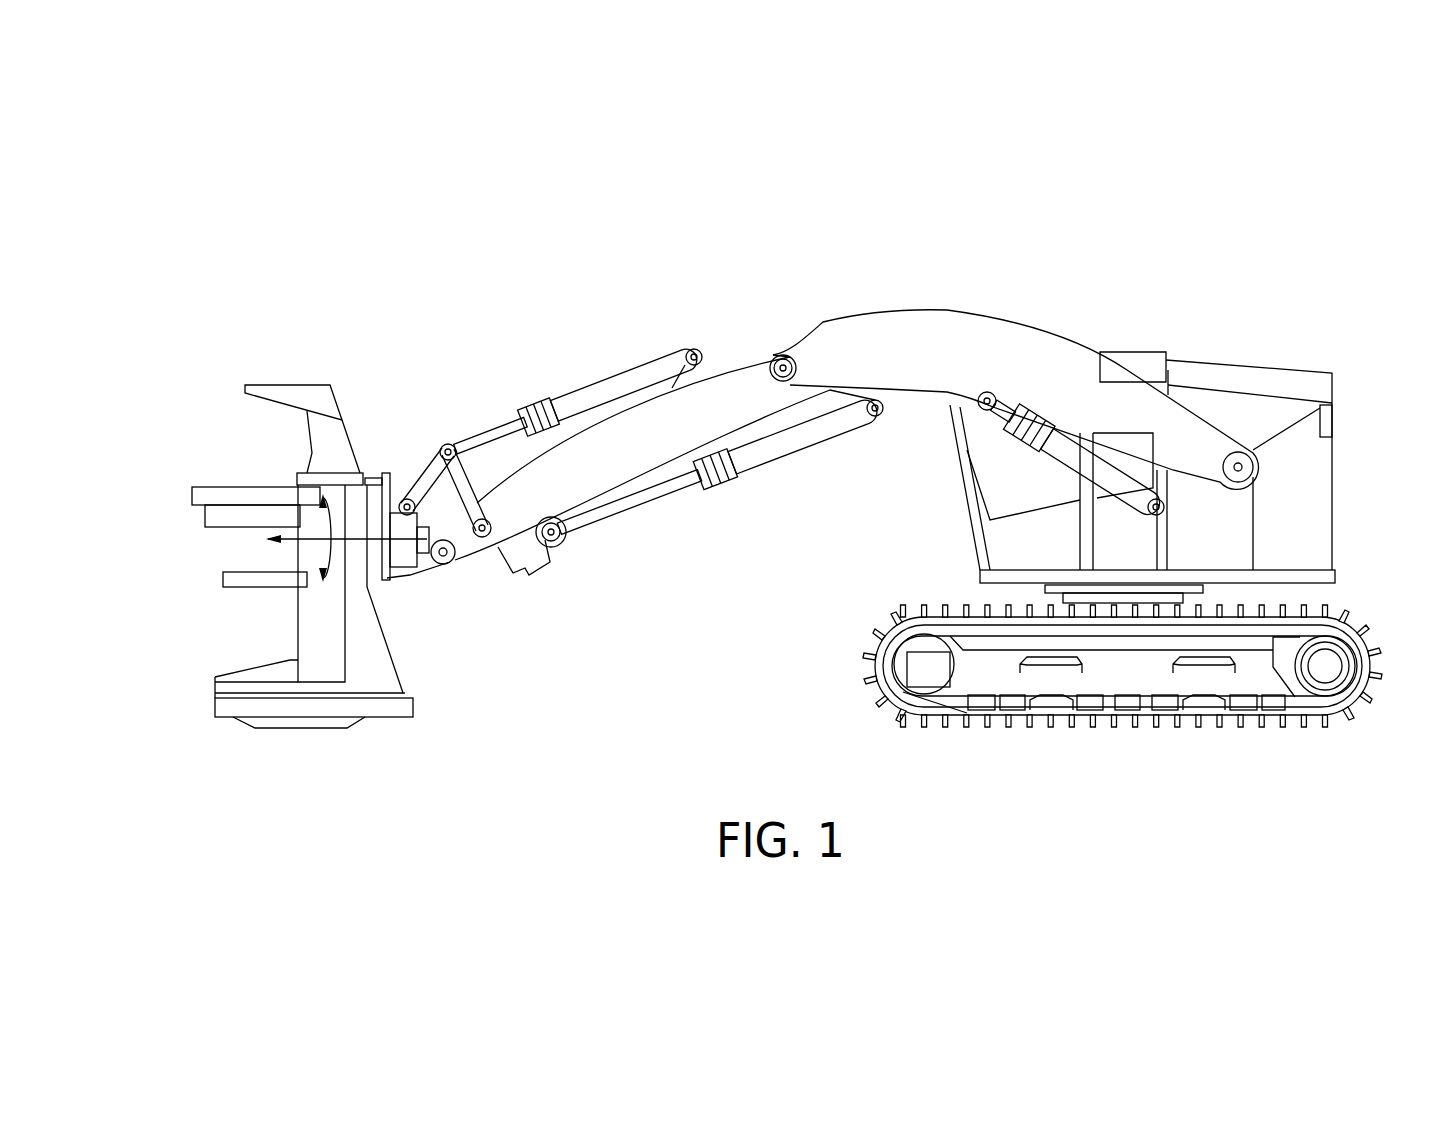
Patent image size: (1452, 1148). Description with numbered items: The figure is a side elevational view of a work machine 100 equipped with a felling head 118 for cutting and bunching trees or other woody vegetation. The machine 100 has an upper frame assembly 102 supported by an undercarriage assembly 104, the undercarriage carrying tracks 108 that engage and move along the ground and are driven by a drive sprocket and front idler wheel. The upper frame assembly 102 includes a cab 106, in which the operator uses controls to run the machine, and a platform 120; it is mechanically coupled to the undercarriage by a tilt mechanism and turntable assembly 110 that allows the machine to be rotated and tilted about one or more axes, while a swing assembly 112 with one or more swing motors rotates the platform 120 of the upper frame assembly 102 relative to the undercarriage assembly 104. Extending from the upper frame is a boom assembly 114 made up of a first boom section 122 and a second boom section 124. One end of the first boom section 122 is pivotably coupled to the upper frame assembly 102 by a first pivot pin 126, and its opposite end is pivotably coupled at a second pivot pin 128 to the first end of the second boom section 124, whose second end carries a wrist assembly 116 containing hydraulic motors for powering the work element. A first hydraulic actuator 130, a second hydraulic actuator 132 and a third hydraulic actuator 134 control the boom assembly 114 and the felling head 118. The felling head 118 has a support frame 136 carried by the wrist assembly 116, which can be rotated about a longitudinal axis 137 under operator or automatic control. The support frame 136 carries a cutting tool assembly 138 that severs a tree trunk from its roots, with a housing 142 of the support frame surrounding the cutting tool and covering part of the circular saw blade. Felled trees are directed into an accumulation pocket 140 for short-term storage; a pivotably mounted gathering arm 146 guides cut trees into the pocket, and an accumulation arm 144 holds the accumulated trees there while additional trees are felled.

The work machine 100 is at (1165, 240).
The upper frame assembly 102 is at (1345, 452).
The undercarriage assembly 104 is at (1120, 740).
The cab 106 is at (1005, 437).
The tracks 108 is at (855, 655).
The tilt mechanism and turntable assembly 110 is at (1047, 596).
The swing assembly 112 is at (1207, 590).
The boom assembly 114 is at (875, 292).
The wrist assembly 116 is at (418, 582).
The felling head 118 is at (357, 425).
The platform 120 is at (1335, 574).
The first boom section 122 is at (995, 340).
The second boom section 124 is at (650, 415).
The first pivot pin 126 is at (1254, 470).
The second pivot pin 128 is at (796, 368).
The first hydraulic actuator 130 is at (1058, 437).
The second hydraulic actuator 132 is at (778, 452).
The third hydraulic actuator 134 is at (572, 408).
The support frame 136 is at (370, 662).
The longitudinal axis 137 is at (373, 533).
The cutting tool assembly 138 is at (288, 630).
The accumulation pocket 140 is at (237, 661).
The housing 142 is at (385, 717).
The accumulation arm 144 is at (222, 580).
The gathering arm 146 is at (210, 490).